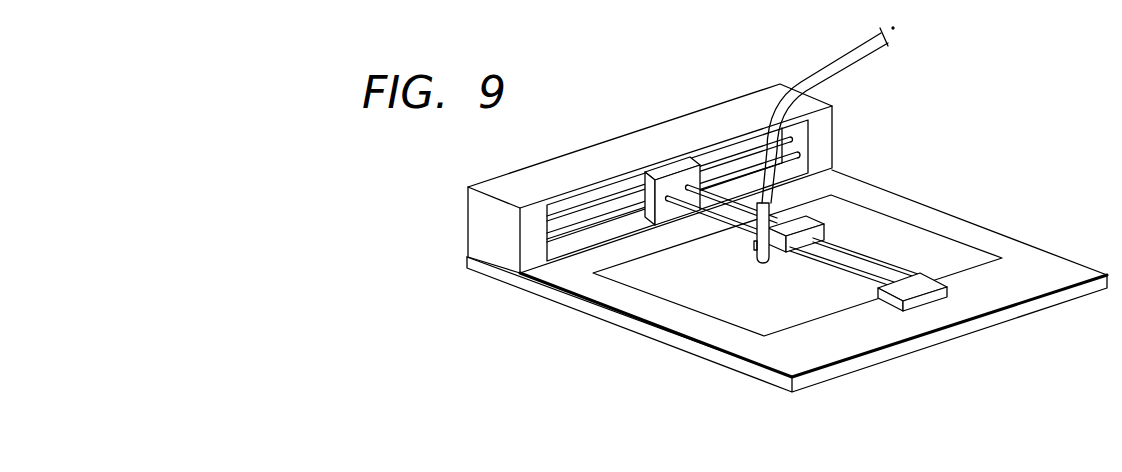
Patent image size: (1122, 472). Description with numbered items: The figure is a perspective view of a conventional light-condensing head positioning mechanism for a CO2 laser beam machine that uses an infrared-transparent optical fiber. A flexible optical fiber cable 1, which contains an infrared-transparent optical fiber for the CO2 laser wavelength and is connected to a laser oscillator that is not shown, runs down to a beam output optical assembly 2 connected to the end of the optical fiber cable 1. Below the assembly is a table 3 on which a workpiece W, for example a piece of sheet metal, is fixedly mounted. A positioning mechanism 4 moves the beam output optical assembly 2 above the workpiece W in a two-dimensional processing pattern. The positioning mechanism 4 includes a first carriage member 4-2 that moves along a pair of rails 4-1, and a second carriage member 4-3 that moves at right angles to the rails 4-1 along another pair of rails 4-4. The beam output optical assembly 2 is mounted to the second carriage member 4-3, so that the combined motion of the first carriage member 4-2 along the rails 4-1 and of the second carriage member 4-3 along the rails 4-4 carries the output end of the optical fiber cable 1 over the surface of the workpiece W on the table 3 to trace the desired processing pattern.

The flexible optical fiber cable 1 is at (855, 63).
The beam output optical assembly 2 is at (780, 200).
The table 3 is at (1027, 255).
The workpiece W is at (933, 218).
The positioning mechanism 4 is at (520, 353).
The rails 4-1 is at (582, 230).
The first carriage member 4-2 is at (667, 207).
The second carriage member 4-3 is at (787, 234).
The rails 4-4 is at (849, 273).